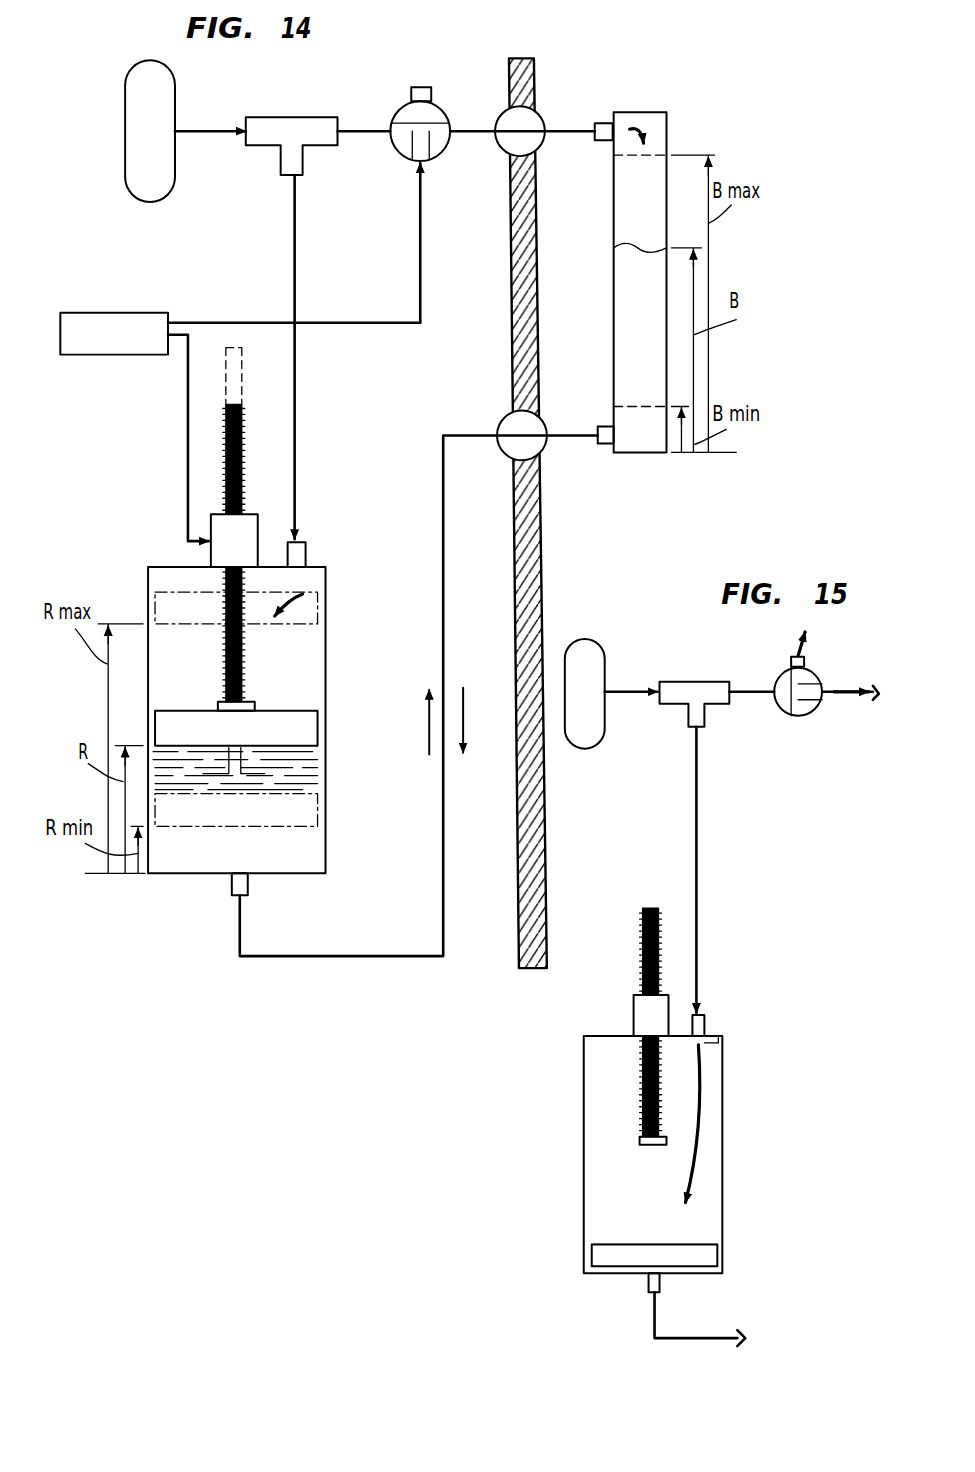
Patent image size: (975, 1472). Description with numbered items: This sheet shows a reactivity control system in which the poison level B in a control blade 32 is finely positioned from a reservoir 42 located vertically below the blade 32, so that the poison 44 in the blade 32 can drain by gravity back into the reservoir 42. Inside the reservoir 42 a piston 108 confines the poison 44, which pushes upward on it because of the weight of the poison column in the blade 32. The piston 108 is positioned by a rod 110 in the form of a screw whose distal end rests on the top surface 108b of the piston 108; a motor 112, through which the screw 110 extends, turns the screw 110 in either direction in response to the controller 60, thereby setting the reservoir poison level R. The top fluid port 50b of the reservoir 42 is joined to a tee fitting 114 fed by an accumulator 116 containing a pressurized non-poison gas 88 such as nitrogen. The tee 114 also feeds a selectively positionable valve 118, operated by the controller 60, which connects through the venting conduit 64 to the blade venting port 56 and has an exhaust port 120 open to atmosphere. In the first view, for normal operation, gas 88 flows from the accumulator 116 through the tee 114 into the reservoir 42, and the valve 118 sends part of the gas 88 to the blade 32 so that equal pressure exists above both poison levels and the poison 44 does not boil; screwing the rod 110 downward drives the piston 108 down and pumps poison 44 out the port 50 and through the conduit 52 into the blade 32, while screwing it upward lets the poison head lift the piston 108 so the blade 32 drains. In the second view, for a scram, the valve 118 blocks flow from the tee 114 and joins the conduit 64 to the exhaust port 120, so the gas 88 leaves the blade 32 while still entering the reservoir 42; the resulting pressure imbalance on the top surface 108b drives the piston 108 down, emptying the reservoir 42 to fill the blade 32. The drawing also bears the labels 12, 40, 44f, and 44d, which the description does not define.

In FIG. 14, the wall / bulkhead 12 is at (510, 258).
In FIG. 14, the control blade 32 is at (668, 113).
In FIG. 14, the lower fitting 40 is at (605, 440).
In FIG. 14, the reservoir 42 is at (326, 661).
In FIG. 15, the reservoir 42 is at (724, 1111).
In FIG. 14, the poison 44 is at (612, 297).
In FIG. 14, the liquid fill direction 44f is at (427, 730).
In FIG. 14, the liquid drain direction 44d is at (461, 700).
In FIG. 14, the port 50 is at (250, 882).
In FIG. 15, the port 50 is at (658, 1283).
In FIG. 14, the top fluid port 50b is at (303, 551).
In FIG. 15, the top fluid port 50b is at (703, 1020).
In FIG. 14, the conduit 52 is at (441, 445).
In FIG. 15, the conduit 52 is at (653, 1325).
In FIG. 14, the blade venting port 56 is at (600, 118).
In FIG. 14, the controller 60 is at (103, 352).
In FIG. 14, the venting conduit 64 is at (467, 125).
In FIG. 15, the venting conduit 64 is at (850, 714).
In FIG. 14, the non-poison fluid 88 is at (634, 122).
In FIG. 15, the non-poison fluid 88 is at (797, 652).
In FIG. 14, the piston 108 is at (305, 725).
In FIG. 15, the piston 108 is at (705, 1257).
In FIG. 14, the top surface 108b is at (300, 707).
In FIG. 15, the top surface 108b is at (700, 1242).
In FIG. 14, the rod 110 is at (245, 656).
In FIG. 15, the rod 110 is at (658, 1106).
In FIG. 14, the motor 112 is at (208, 553).
In FIG. 15, the motor 112 is at (632, 1020).
In FIG. 14, the tee fitting 114 is at (290, 112).
In FIG. 15, the tee fitting 114 is at (703, 678).
In FIG. 14, the accumulator 116 is at (122, 113).
In FIG. 15, the accumulator 116 is at (603, 652).
In FIG. 14, the valve 118 is at (439, 146).
In FIG. 15, the valve 118 is at (812, 702).
In FIG. 14, the exhaust port 120 is at (434, 119).
In FIG. 15, the exhaust port 120 is at (811, 682).